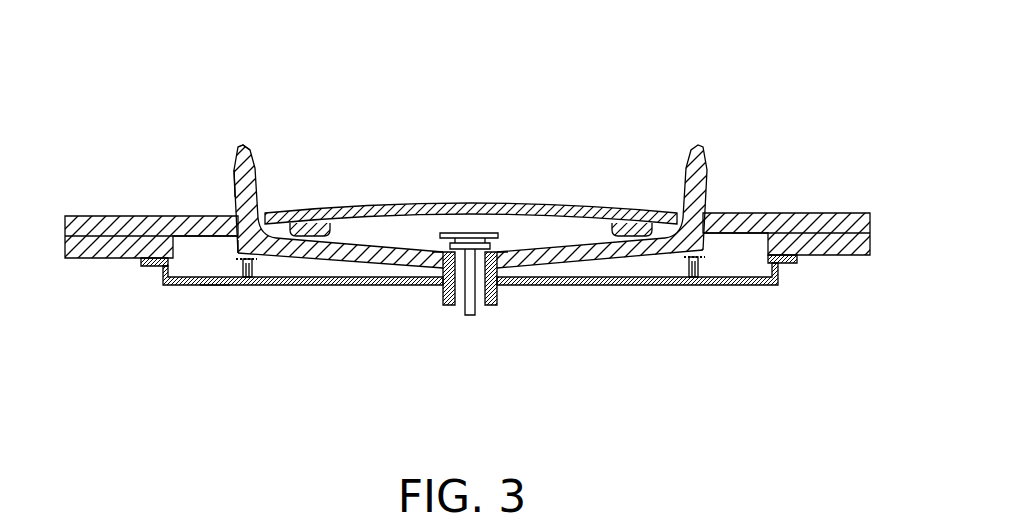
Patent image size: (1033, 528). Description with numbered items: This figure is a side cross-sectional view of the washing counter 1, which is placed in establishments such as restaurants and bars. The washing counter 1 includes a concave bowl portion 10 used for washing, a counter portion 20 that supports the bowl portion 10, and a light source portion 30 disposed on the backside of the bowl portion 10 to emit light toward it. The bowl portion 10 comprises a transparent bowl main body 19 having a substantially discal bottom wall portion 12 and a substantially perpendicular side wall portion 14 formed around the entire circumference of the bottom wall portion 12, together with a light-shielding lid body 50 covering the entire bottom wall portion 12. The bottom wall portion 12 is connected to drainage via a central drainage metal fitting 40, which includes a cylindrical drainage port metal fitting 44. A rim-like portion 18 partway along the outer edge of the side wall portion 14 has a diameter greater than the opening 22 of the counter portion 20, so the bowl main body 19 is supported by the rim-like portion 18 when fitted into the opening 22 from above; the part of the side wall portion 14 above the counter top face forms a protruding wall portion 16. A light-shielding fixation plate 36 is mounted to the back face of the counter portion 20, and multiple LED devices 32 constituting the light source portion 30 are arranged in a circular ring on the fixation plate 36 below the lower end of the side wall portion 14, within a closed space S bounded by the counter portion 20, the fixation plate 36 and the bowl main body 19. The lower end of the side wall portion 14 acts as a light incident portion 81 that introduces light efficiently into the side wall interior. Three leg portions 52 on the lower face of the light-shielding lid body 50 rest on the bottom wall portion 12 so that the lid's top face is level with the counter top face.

The washing counter 1 is at (590, 80).
The bowl portion 10 is at (549, 270).
The bottom wall portion 12 is at (362, 245).
The side wall portion 14 is at (243, 147).
The protruding wall portion 16 is at (232, 175).
The rim-like portion 18 is at (233, 197).
The bowl main body 19 is at (388, 46).
The counter portion 20 is at (117, 216).
The opening 22 is at (232, 257).
The light source portion 30 is at (283, 375).
The LED device 32 is at (247, 278).
The fixation plate 36 is at (213, 287).
The drainage metal fitting 40 is at (484, 228).
The drainage port metal fitting 44 is at (443, 295).
The light-shielding lid body 50 is at (413, 203).
The leg portion 52 is at (330, 227).
The light incident portion 81 is at (262, 263).
The closed space S is at (735, 253).